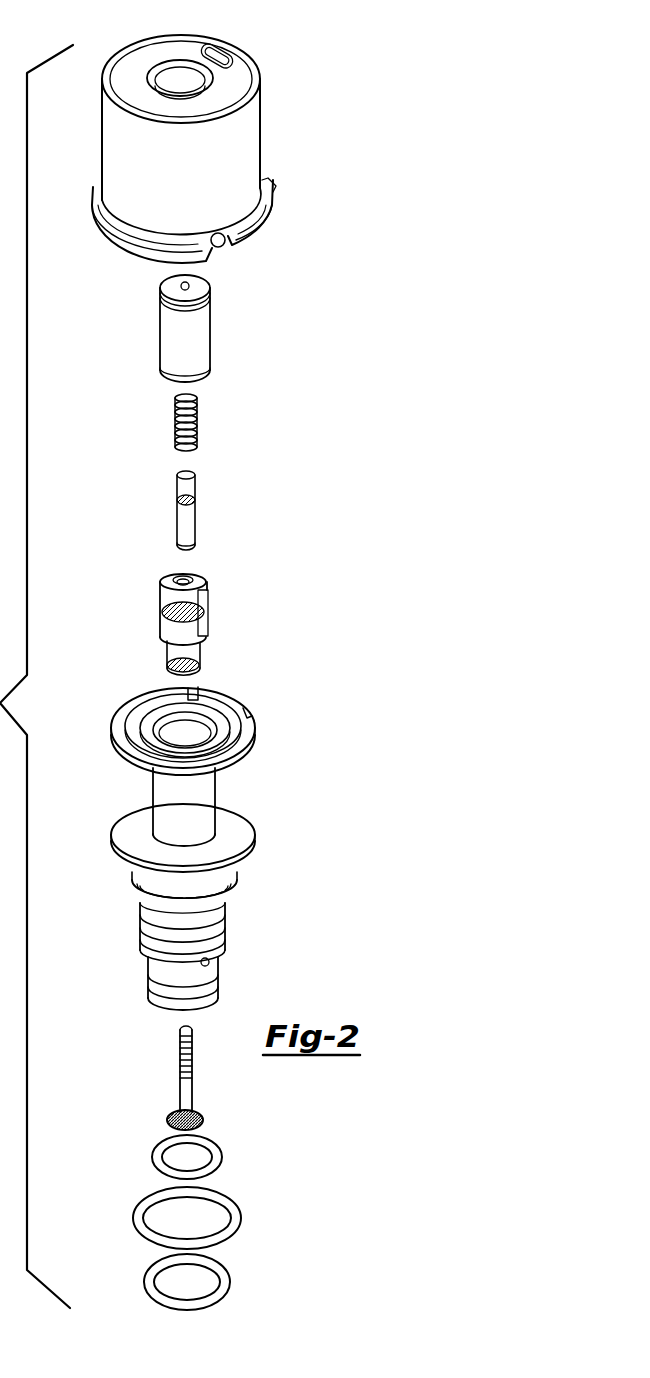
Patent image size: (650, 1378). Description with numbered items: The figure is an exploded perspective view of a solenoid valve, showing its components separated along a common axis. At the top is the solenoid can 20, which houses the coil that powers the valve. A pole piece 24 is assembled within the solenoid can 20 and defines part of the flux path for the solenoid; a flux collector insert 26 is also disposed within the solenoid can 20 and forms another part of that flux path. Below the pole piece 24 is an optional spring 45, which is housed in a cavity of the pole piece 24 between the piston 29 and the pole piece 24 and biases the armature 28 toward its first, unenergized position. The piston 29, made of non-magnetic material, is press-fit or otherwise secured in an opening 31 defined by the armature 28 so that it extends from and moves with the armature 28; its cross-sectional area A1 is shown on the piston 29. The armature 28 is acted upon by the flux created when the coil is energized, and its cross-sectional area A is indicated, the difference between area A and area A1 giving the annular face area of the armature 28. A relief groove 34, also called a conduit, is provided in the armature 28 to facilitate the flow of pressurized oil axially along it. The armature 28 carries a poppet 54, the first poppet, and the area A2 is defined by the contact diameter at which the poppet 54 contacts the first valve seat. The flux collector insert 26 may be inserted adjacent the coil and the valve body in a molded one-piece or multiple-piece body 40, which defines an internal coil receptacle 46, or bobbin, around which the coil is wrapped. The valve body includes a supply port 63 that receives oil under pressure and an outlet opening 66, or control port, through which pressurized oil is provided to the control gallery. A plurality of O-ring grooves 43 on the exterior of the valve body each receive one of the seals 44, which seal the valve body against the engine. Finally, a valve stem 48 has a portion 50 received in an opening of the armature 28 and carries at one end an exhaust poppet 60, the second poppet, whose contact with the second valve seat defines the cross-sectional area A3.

The solenoid can 20 is at (254, 125).
The pole piece 24 is at (203, 332).
The spring 45 is at (197, 427).
The cross-sectional area of the piston A1 is at (190, 494).
The piston 29 is at (218, 509).
The opening 31 is at (188, 579).
The cross-sectional area of the armature A is at (197, 592).
The armature 28 is at (181, 601).
The relief groove 34 is at (207, 632).
The area defined by contact diameter D2 A2 is at (167, 650).
The poppet 54 is at (196, 675).
The body 40 is at (189, 848).
The coil receptacle 46 is at (205, 813).
The flux collector insert 26 is at (250, 865).
The O-ring grooves 43 is at (141, 923).
The supply port 63 is at (193, 912).
The outlet opening 66 is at (210, 963).
The portion of the valve stem 50 is at (180, 1027).
The valve stem 48 is at (189, 1079).
The cross-sectional area A3 is at (170, 1112).
The exhaust poppet 60 is at (190, 1114).
The seals 44 is at (220, 1162).